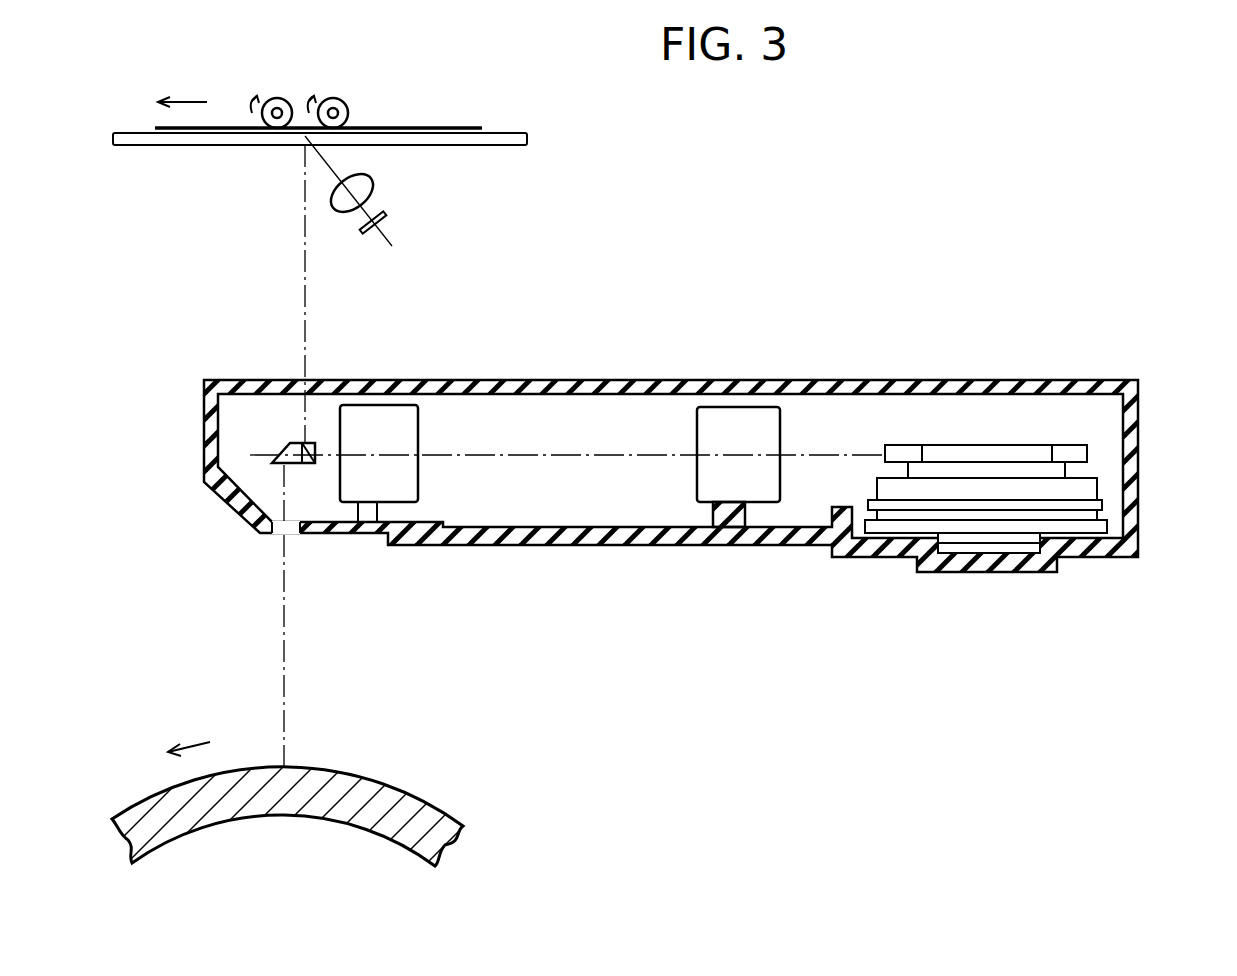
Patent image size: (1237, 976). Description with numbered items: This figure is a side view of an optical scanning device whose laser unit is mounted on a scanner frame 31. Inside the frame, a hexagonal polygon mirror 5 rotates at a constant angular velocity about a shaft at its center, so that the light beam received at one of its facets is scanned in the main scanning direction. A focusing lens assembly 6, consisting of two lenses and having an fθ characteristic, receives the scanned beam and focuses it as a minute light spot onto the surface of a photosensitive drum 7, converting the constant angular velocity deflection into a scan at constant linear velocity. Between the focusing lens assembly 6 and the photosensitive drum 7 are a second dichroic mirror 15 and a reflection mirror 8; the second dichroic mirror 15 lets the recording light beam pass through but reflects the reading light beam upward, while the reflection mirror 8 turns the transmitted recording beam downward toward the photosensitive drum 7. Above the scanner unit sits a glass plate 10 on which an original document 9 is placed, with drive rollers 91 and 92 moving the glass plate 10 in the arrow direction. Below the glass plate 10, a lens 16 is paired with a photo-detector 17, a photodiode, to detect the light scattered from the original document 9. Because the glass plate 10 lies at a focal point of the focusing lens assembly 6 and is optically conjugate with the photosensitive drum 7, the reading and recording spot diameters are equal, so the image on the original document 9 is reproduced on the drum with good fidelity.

The hexagonal polygon mirror 5 is at (905, 445).
The focusing lens assembly 6 is at (382, 405).
The photosensitive drum 7 is at (152, 797).
The reflection mirror 8 is at (272, 458).
The original document 9 is at (455, 126).
The glass plate 10 is at (489, 148).
The second dichroic mirror 15 is at (310, 464).
The lens 16 is at (376, 187).
The photo-detector 17 is at (392, 216).
The scanner frame 31 is at (1130, 440).
The drive roller 91 is at (281, 98).
The drive roller 92 is at (346, 98).